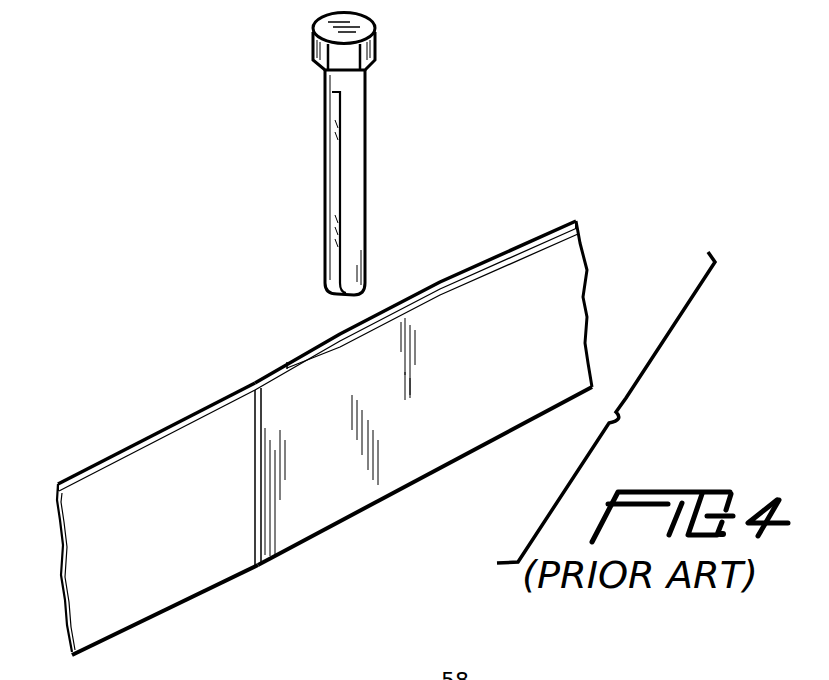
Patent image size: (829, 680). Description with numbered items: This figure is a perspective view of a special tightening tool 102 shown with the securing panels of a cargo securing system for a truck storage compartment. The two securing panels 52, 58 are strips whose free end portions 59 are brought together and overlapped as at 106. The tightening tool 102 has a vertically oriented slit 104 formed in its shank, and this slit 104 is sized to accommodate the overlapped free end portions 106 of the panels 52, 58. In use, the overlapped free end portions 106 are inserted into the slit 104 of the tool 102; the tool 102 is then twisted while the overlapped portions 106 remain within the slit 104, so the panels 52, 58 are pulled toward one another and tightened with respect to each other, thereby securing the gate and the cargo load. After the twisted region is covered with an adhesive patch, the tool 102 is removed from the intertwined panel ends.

The tightening tool 102 is at (378, 41).
The slit 104 is at (336, 145).
The panel 52 is at (545, 250).
The panel 58 is at (150, 458).
The free end portions 59 is at (330, 343).
The overlapped free end portions 106 is at (340, 450).